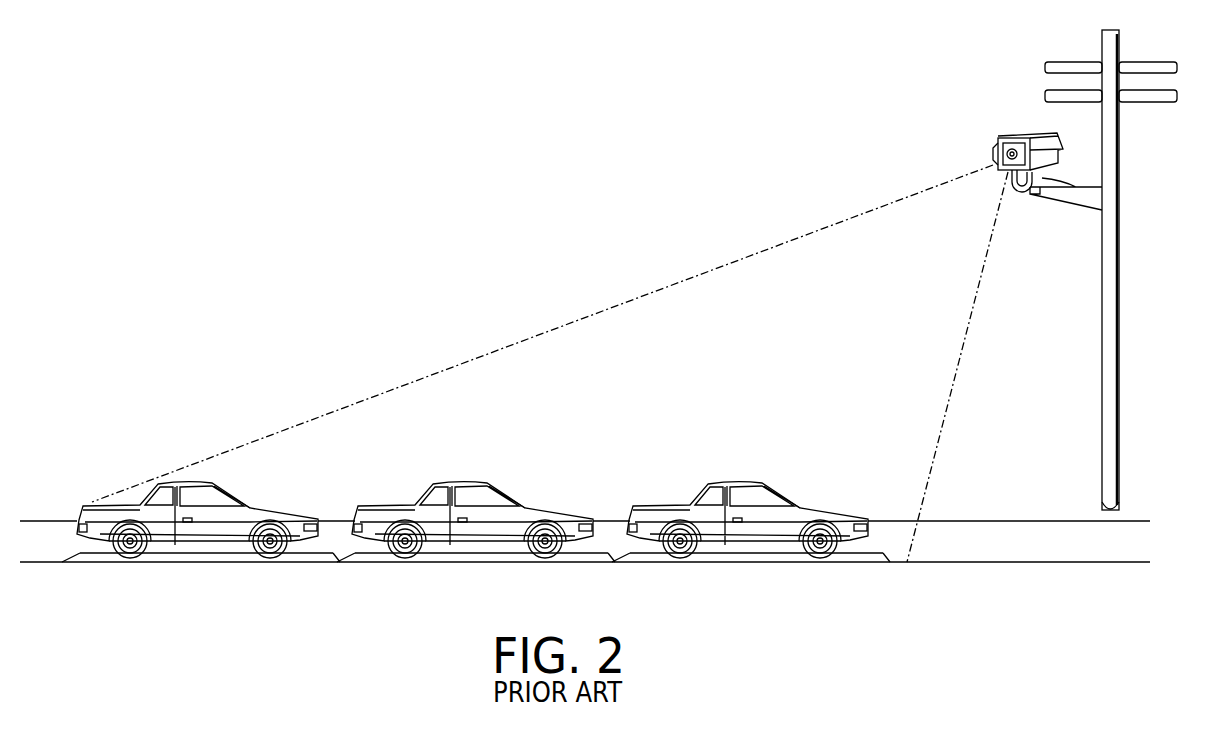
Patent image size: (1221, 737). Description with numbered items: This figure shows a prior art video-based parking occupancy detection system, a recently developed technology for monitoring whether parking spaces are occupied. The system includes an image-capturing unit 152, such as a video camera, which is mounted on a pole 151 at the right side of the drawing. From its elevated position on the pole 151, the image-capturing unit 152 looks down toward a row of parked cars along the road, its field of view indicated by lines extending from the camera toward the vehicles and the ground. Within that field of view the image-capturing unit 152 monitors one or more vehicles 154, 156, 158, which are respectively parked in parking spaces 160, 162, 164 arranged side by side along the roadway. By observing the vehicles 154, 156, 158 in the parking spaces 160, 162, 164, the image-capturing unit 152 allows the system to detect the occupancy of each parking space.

The pole 151 is at (1120, 230).
The image-capturing unit 152 is at (1020, 137).
The vehicle 154 is at (252, 486).
The vehicle 156 is at (520, 486).
The vehicle 158 is at (792, 485).
The parking space 160 is at (197, 558).
The parking space 162 is at (483, 558).
The parking space 164 is at (753, 558).